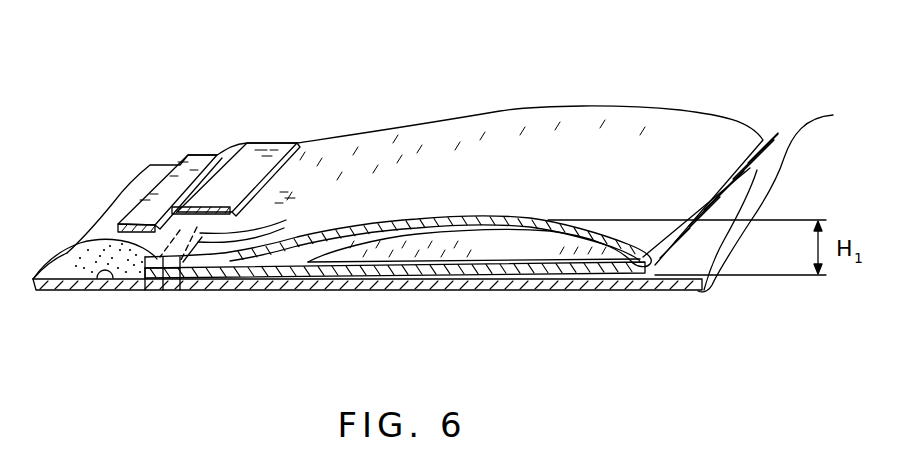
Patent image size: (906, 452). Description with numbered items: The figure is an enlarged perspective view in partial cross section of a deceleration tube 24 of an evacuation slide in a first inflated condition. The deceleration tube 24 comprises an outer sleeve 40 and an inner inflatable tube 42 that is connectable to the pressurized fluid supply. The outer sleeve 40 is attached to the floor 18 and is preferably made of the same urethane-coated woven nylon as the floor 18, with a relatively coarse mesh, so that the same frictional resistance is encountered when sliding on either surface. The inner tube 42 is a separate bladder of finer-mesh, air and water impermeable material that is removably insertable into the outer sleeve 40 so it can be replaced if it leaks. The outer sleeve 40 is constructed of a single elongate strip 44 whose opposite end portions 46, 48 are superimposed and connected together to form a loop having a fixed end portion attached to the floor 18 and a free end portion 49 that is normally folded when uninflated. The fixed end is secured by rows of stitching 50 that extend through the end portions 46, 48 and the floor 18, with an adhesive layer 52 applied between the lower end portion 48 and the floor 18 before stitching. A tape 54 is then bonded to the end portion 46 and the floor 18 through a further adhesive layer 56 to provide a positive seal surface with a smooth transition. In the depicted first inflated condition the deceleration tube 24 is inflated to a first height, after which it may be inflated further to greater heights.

The floor 18 is at (686, 258).
The deceleration tube 24 is at (598, 107).
The outer sleeve 40 is at (432, 162).
The inner inflatable tube 42 is at (530, 235).
The elongate strip 44 is at (650, 135).
The end portion 46 is at (100, 244).
The lower end portion 48 is at (128, 280).
The free end portion 49 is at (783, 198).
The rows of stitching 50 is at (236, 234).
The adhesive layer 52 is at (218, 280).
The tape 54 is at (253, 157).
The adhesive layer 56 is at (101, 282).